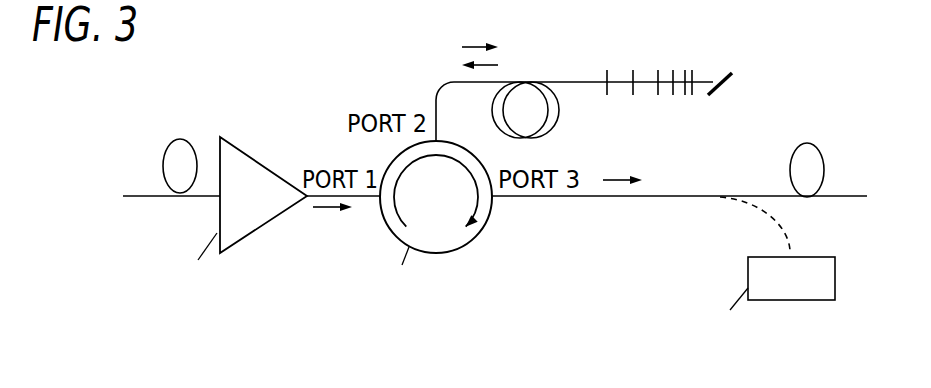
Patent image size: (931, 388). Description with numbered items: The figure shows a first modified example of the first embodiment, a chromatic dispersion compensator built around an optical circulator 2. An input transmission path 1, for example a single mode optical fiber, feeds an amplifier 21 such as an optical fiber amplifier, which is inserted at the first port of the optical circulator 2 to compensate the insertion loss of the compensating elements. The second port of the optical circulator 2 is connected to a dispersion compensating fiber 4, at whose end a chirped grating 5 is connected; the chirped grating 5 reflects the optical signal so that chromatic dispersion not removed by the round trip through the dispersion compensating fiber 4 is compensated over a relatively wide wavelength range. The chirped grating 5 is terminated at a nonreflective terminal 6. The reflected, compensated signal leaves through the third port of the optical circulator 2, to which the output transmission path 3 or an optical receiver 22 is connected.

The input transmission path 1 is at (190, 197).
The optical circulator 2 is at (385, 223).
The output transmission path 3 is at (578, 197).
The dispersion compensating fiber 4 is at (525, 82).
The chirped grating 5 is at (649, 73).
The nonreflective terminal 6 is at (718, 87).
The amplifier 21 is at (257, 162).
The optical receiver 22 is at (748, 275).